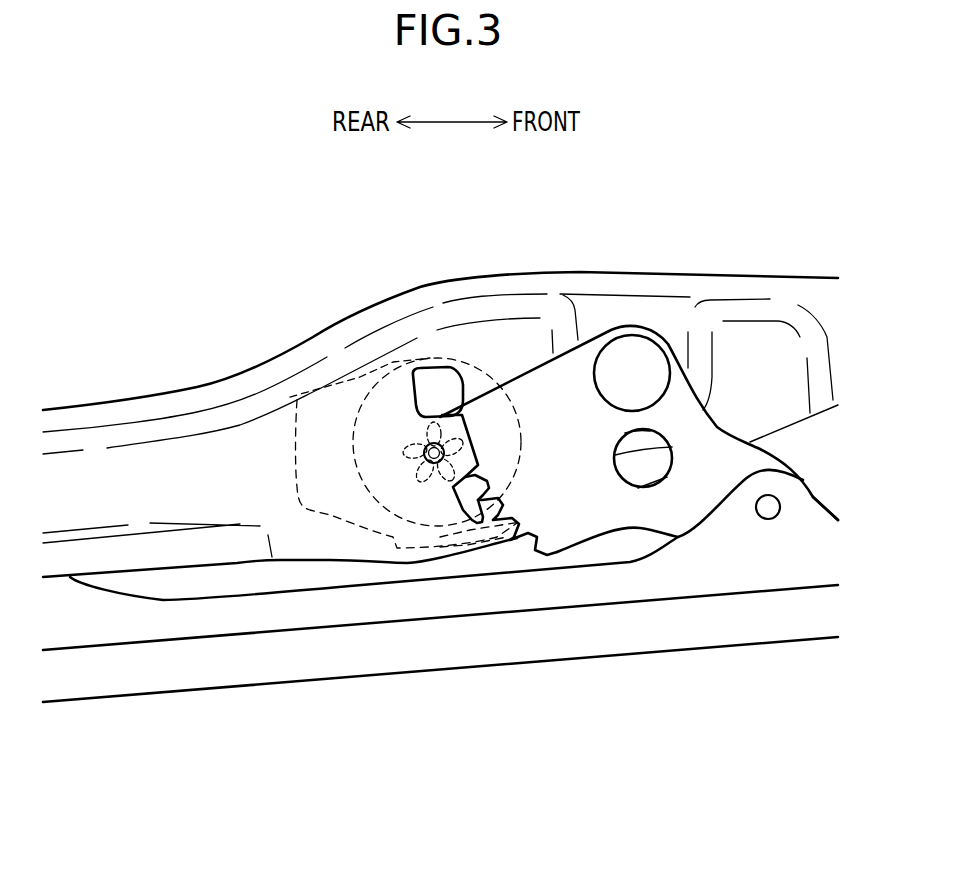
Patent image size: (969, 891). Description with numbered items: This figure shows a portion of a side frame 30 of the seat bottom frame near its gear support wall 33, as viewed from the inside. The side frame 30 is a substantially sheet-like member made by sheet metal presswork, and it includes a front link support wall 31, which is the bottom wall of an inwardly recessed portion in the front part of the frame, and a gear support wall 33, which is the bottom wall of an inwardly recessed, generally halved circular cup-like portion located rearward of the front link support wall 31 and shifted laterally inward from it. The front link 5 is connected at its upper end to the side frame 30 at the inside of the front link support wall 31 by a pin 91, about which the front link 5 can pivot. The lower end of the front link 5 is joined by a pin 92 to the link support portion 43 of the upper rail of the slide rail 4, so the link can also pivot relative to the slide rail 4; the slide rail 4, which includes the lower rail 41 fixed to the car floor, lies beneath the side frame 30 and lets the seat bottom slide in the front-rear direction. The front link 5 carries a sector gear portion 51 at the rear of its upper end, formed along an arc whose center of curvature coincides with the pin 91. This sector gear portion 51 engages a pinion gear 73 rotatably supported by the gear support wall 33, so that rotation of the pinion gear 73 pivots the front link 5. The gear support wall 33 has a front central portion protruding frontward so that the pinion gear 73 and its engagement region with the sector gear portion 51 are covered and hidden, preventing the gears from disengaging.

The slide rail 4 is at (709, 673).
The front link 5 is at (531, 353).
The side frame 30 is at (194, 374).
The front link support wall 31 is at (674, 323).
The gear support wall 33 is at (462, 408).
The lower rail 41 is at (215, 684).
The link support portion 43 is at (807, 518).
The sector gear portion 51 is at (487, 487).
The pinion gear 73 is at (425, 458).
The pin 91 is at (625, 352).
The pin 92 is at (771, 496).